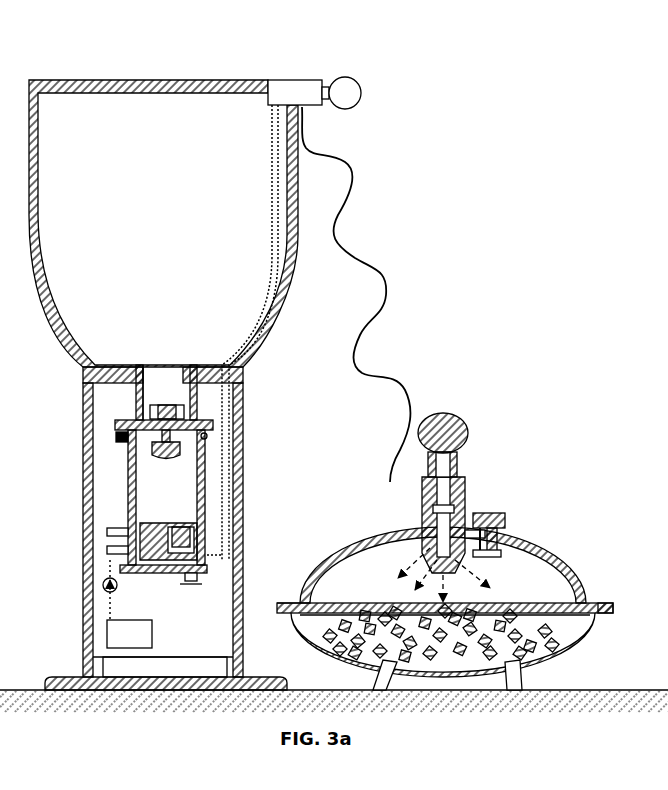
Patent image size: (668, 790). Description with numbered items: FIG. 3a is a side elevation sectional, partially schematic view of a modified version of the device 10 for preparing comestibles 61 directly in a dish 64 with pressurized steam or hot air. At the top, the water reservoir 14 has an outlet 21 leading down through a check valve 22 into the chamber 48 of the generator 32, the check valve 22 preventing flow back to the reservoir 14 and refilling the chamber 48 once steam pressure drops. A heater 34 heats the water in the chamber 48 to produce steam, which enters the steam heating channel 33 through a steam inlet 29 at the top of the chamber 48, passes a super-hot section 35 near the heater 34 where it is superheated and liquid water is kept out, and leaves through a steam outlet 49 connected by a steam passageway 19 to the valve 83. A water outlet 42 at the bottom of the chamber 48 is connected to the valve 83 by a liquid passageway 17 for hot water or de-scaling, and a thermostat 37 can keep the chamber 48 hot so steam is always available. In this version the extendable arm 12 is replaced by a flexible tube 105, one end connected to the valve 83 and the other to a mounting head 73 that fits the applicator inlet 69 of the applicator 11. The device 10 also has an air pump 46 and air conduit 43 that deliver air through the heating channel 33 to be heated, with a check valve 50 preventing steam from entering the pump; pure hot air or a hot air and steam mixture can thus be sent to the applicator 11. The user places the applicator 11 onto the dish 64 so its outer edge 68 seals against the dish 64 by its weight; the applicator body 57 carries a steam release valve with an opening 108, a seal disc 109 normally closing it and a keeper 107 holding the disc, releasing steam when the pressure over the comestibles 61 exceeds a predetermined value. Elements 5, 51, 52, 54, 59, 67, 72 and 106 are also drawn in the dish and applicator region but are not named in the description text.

The device 10 is at (278, 58).
The applicator 11 is at (565, 553).
The extendable member or arm 12 is at (387, 294).
The water reservoir 14 is at (160, 184).
The liquid passageway 17 is at (270, 140).
The steam passageway 19 is at (276, 178).
The outlet 21 is at (152, 372).
The check valve 22 is at (166, 402).
The steam inlet 29 is at (118, 440).
The generator 32 is at (127, 501).
The steam heating channel 33 is at (130, 492).
The heater 34 is at (110, 532).
The super-hot section 35 is at (122, 555).
The thermostat 37 is at (203, 582).
The water outlet 42 is at (170, 523).
The air conduit 43 is at (108, 610).
The air pump 46 is at (107, 632).
The chamber 48 is at (190, 468).
The steam outlet 49 is at (245, 568).
The check valve 50 is at (102, 588).
The dish rim arrow 5 is at (295, 595).
The rim flange 51 is at (598, 603).
The plate 52 is at (612, 614).
The flange edge 54 is at (612, 608).
The applicator body 57 is at (443, 553).
The dome chamber 59 is at (402, 538).
The comestibles 61 is at (380, 617).
The dish 64 is at (560, 663).
The support surface 67 is at (495, 708).
The outer edge 68 is at (598, 636).
The applicator inlet 69 is at (408, 509).
The nozzle seal 72 is at (440, 510).
The mounting head 73 is at (455, 470).
The valve 83 is at (348, 76).
The flexible or extendable tube 105 is at (392, 290).
The clamp block 106 is at (480, 513).
The keeper 107 is at (497, 557).
The opening 108 is at (498, 535).
The steam release valve / seal disc 109 is at (503, 506).